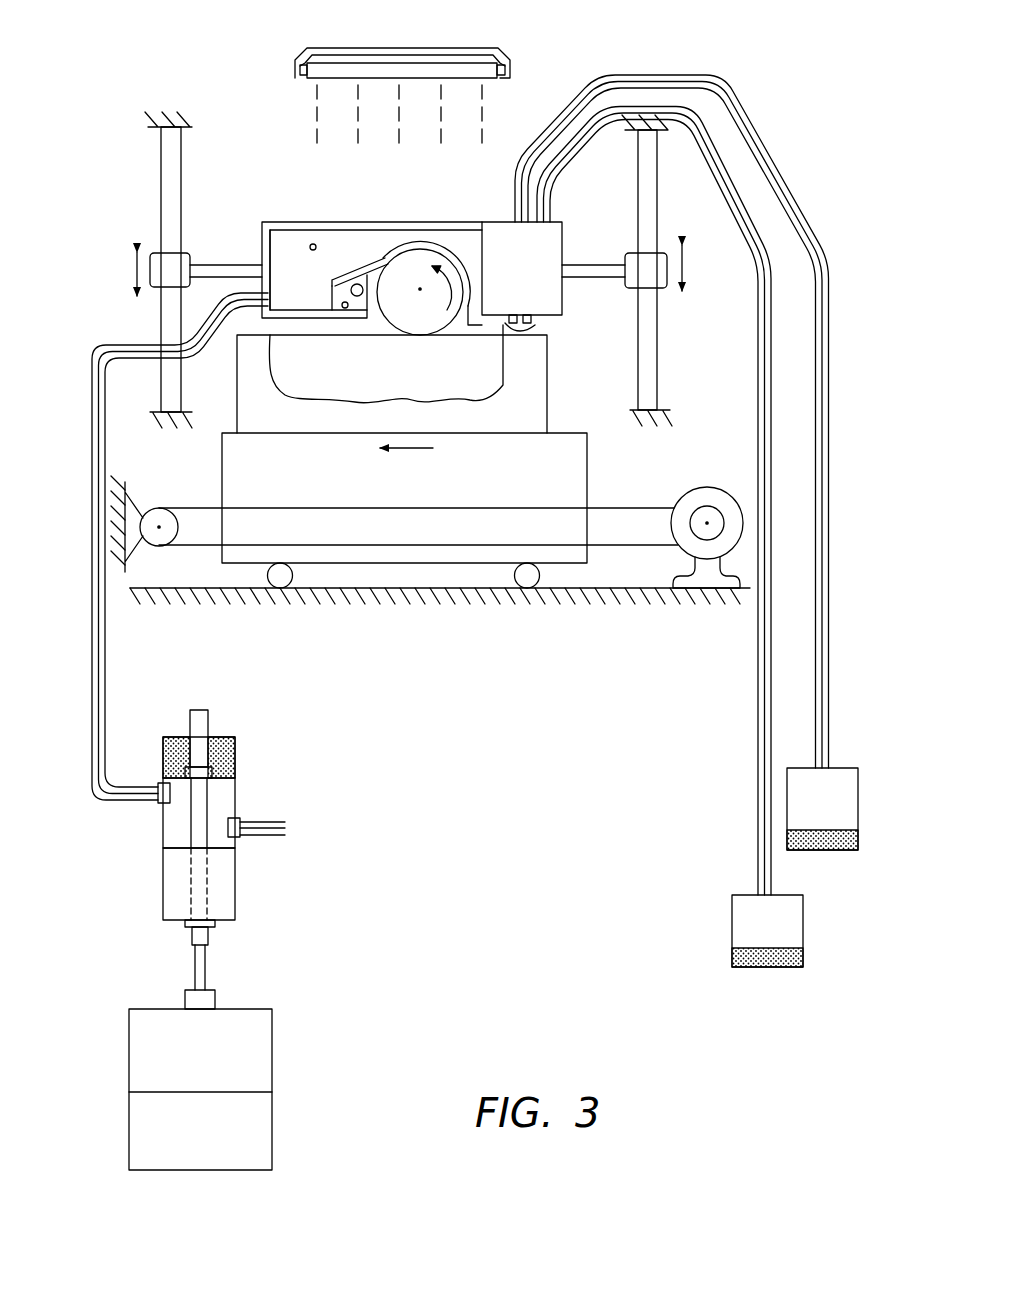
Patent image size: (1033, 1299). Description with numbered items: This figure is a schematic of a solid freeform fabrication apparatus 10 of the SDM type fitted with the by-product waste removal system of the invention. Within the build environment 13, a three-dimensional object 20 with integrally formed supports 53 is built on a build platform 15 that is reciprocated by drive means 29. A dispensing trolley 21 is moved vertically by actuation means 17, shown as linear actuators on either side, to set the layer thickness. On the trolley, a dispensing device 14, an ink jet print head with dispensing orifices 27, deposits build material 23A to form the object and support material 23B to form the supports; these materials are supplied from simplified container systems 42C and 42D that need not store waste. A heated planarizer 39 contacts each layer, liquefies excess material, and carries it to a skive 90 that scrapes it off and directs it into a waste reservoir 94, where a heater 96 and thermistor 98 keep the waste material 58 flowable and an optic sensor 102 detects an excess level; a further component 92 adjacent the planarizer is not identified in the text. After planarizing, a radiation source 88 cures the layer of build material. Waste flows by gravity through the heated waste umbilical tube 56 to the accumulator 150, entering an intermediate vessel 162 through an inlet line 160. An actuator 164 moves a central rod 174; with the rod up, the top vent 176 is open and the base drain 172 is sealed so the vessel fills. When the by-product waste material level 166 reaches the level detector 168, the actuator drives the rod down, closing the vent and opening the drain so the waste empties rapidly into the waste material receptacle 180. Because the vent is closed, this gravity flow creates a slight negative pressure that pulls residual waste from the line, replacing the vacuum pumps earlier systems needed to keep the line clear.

The solid freeform fabrication apparatus 10 is at (298, 105).
The build environment 13 is at (573, 325).
The dispensing device 14 is at (553, 240).
The build platform 15 is at (504, 471).
The actuation means 17 is at (165, 240).
The three-dimensional object 20 is at (384, 369).
The dispensing trolley 21 is at (438, 221).
The build material 23A is at (757, 930).
The support material 23B is at (818, 784).
The dispensing orifices 27 is at (533, 325).
The drive means 29 is at (704, 488).
The heated planarizer 39 is at (427, 322).
The container system 42C is at (726, 887).
The container system 42D is at (827, 863).
The supports 53 is at (266, 426).
The waste umbilical tube 56 is at (106, 628).
The waste material 58 is at (317, 283).
The radiation source 88 is at (450, 68).
The skive 90 is at (383, 256).
The roller cover 92 is at (420, 247).
The waste reservoir 94 is at (276, 235).
The heater 96 is at (355, 284).
The thermistor 98 is at (342, 304).
The optic sensor 102 is at (312, 244).
The accumulator 150 is at (324, 782).
The inlet line 160 is at (157, 803).
The intermediate vessel 162 is at (237, 791).
The actuator 164 is at (209, 718).
The by-product waste material level 166 is at (172, 894).
The level detector 168 is at (240, 836).
The base drain 172 is at (192, 929).
The central rod 174 is at (202, 846).
The top vent 176 is at (203, 772).
The waste material receptacle 180 is at (272, 1052).